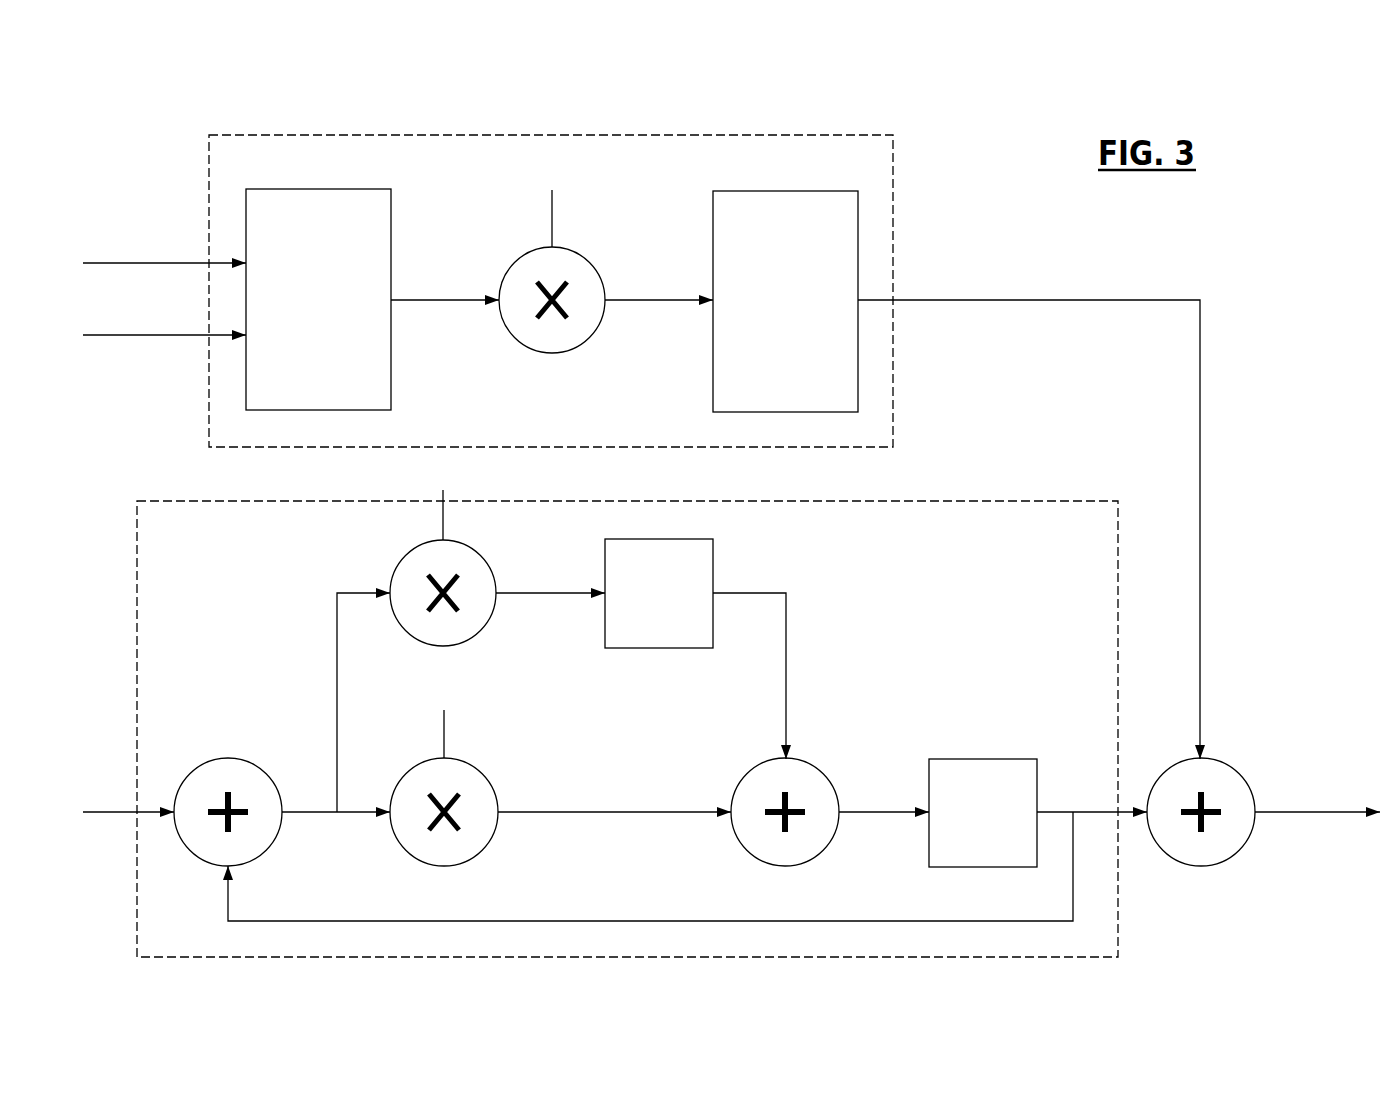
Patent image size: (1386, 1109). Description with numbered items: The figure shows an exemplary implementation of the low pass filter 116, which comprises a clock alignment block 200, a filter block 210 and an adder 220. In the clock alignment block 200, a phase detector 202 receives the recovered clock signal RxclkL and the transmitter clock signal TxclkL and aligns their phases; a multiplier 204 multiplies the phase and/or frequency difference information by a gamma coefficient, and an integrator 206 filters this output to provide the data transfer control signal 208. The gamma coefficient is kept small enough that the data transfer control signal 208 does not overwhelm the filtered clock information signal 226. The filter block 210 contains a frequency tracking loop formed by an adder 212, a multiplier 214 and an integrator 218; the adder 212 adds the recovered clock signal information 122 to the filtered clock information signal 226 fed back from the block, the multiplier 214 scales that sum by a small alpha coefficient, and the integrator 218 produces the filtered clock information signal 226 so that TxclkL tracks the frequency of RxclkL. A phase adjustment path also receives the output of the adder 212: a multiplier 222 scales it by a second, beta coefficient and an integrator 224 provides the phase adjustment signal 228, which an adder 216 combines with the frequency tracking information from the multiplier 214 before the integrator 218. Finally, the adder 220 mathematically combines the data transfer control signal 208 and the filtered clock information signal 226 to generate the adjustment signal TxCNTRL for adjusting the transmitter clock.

The low pass filter 116 is at (296, 92).
The clock alignment block 200 is at (632, 136).
The phase detector 202 is at (391, 344).
The multiplier 204 is at (586, 347).
The integrator 206 is at (713, 240).
The data transfer control signal 208 is at (972, 300).
The filter block 210 is at (1027, 502).
The adder 212 is at (262, 758).
The multiplier 214 is at (482, 850).
The adder 216 is at (820, 858).
The integrator 218 is at (956, 759).
The adder 220 is at (1222, 864).
The multiplier 222 is at (481, 632).
The integrator 224 is at (641, 650).
The filtered clock information signal 226 is at (1055, 812).
The phase adjustment signal 228 is at (786, 642).
The recovered clock signal information 122 is at (118, 812).